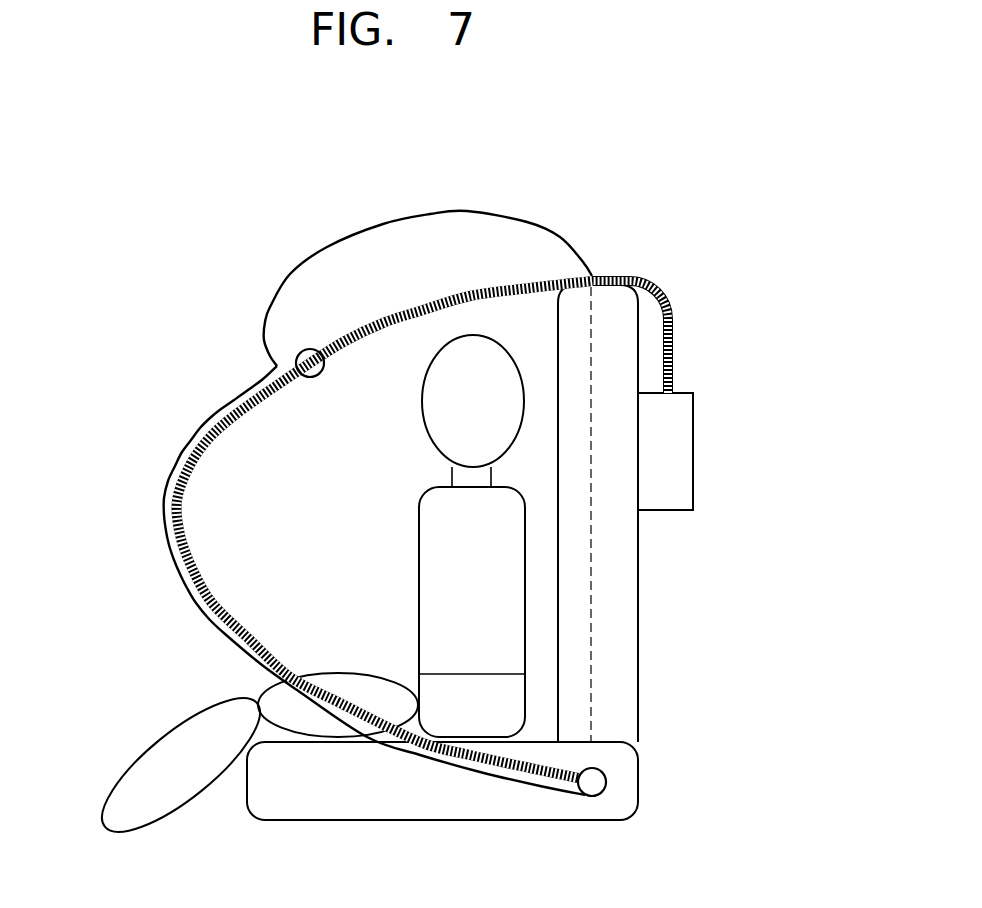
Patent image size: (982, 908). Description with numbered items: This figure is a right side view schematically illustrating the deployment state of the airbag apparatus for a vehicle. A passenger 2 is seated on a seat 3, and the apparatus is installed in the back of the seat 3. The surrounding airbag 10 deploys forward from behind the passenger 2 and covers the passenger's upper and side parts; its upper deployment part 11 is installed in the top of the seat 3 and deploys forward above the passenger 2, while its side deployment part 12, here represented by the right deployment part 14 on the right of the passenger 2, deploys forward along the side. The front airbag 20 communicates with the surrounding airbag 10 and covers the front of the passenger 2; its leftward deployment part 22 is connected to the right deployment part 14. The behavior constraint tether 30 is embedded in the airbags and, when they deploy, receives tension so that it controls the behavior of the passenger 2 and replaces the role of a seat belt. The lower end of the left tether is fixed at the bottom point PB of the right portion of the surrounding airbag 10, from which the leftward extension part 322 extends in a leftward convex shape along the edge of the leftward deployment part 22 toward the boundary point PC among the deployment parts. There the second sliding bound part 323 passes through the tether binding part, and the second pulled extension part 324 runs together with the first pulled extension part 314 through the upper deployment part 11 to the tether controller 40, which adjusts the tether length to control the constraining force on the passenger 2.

The surrounding airbag 10 is at (379, 454).
The upper deployment part 11 is at (362, 258).
The front airbag 20 is at (379, 513).
The leftward deployment part 22 is at (350, 529).
The leftward extension part 322 is at (200, 585).
The second sliding bound part 323 is at (238, 297).
The boundary point PC is at (306, 360).
The bottom point PB is at (595, 783).
The behavior constraint tether 30 is at (714, 307).
The first pulled extension part 314 is at (714, 337).
The second pulled extension part 324 is at (674, 348).
The tether controller 40 is at (680, 417).
The side deployment part 12 is at (650, 513).
The right deployment part 14 is at (540, 622).
The seat 3 is at (504, 552).
The passenger 2 is at (178, 765).